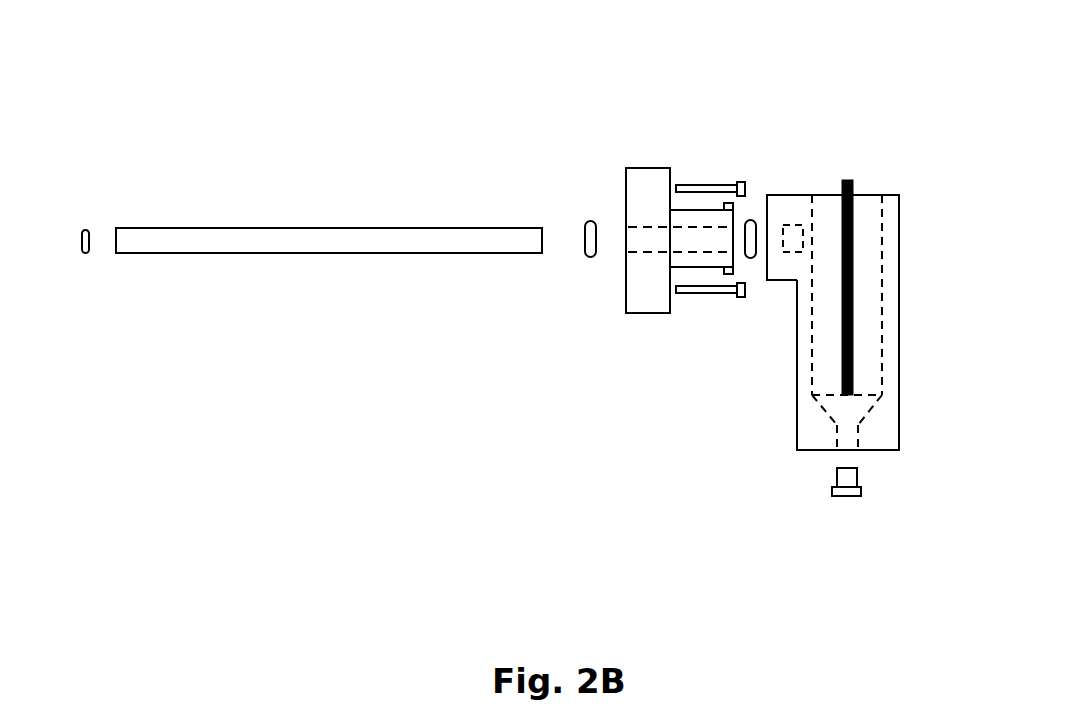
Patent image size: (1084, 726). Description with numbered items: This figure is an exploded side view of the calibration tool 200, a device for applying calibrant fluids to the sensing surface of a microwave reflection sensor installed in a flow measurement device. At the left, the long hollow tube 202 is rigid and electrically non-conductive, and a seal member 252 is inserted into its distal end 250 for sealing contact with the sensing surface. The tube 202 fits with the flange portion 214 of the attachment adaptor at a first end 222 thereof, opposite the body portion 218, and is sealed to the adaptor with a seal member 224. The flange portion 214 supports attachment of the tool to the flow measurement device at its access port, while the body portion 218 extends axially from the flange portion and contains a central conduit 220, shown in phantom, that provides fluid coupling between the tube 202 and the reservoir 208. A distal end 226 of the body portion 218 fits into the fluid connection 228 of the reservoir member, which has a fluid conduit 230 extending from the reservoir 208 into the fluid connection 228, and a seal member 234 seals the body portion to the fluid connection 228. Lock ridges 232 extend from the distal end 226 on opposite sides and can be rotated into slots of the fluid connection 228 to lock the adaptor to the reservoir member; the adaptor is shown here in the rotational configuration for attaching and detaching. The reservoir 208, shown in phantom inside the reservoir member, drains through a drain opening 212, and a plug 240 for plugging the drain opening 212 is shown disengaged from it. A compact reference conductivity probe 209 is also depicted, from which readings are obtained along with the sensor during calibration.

The calibration tool 200 is at (223, 132).
The hollow tube 202 is at (188, 254).
The reservoir 208 is at (847, 322).
The compact reference conductivity probe 209 is at (854, 181).
The drain opening 212 is at (861, 453).
The flange portion 214 is at (627, 311).
The body portion 218 is at (700, 210).
The central conduit 220 is at (643, 227).
The first end 222 is at (612, 193).
The seal member 224 is at (585, 255).
The distal end 226 is at (762, 170).
The fluid connection 228 is at (768, 283).
The fluid conduit 230 is at (796, 224).
The lock ridges 232 is at (724, 292).
The seal member 234 is at (753, 260).
The plug 240 is at (845, 497).
The distal end 250 is at (130, 213).
The seal member 252 is at (82, 255).